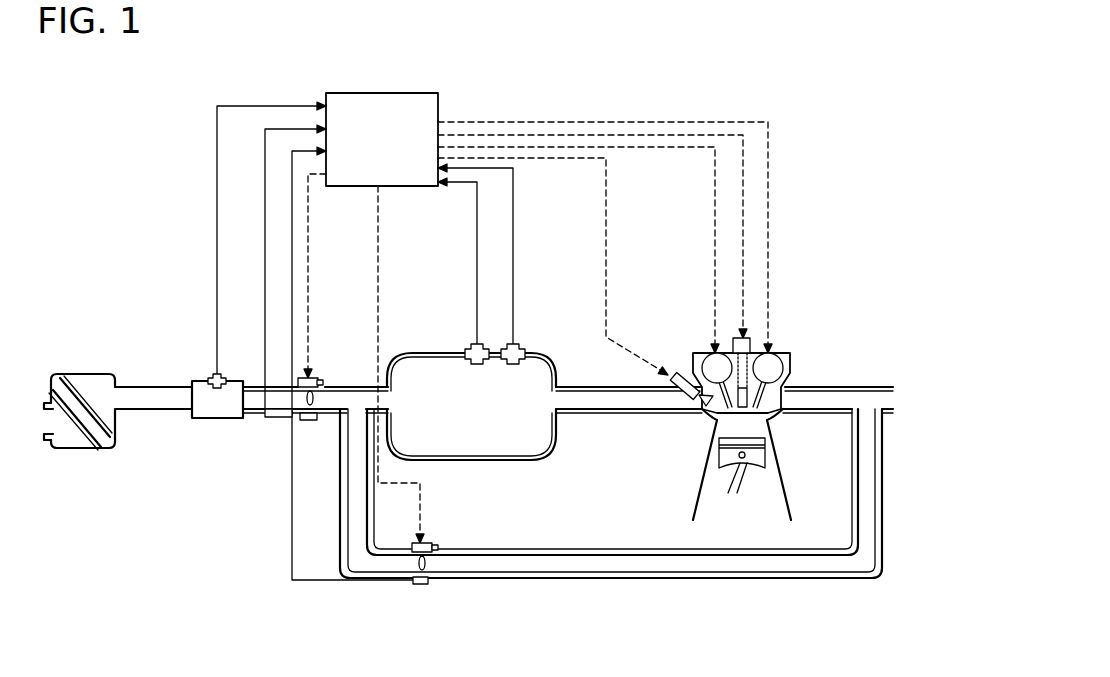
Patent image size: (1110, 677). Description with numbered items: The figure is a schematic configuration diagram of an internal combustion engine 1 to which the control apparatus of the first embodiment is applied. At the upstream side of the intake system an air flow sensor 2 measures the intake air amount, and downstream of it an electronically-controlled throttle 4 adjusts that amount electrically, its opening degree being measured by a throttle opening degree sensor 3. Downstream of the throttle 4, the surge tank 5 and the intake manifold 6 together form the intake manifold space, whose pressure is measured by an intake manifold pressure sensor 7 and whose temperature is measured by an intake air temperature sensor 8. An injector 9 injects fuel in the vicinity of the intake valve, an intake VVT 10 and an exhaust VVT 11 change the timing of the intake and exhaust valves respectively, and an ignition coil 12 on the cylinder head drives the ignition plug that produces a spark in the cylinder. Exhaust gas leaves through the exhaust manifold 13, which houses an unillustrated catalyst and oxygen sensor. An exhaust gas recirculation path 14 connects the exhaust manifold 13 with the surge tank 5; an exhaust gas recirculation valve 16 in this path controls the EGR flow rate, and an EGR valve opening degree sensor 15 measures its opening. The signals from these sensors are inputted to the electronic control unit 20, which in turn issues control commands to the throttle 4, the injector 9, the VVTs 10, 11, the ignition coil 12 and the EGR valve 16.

The internal combustion engine 1 is at (739, 390).
The air flow sensor 2 is at (196, 350).
The throttle opening degree sensor 3 is at (275, 462).
The electronically-controlled throttle 4 is at (331, 341).
The surge tank 5 is at (471, 450).
The intake manifold 6 is at (629, 448).
The intake manifold pressure sensor 7 is at (446, 312).
The intake air temperature sensor 8 is at (531, 307).
The injector 9 is at (671, 431).
The intake VVT 10 is at (686, 327).
The exhaust VVT 11 is at (801, 328).
The ignition coil 12 is at (770, 326).
The exhaust manifold 13 is at (839, 355).
The exhaust gas recirculation path 14 is at (612, 526).
The EGR valve opening degree sensor 15 is at (374, 610).
The exhaust gas recirculation valve 16 is at (456, 523).
The electronic control unit 20 is at (427, 119).